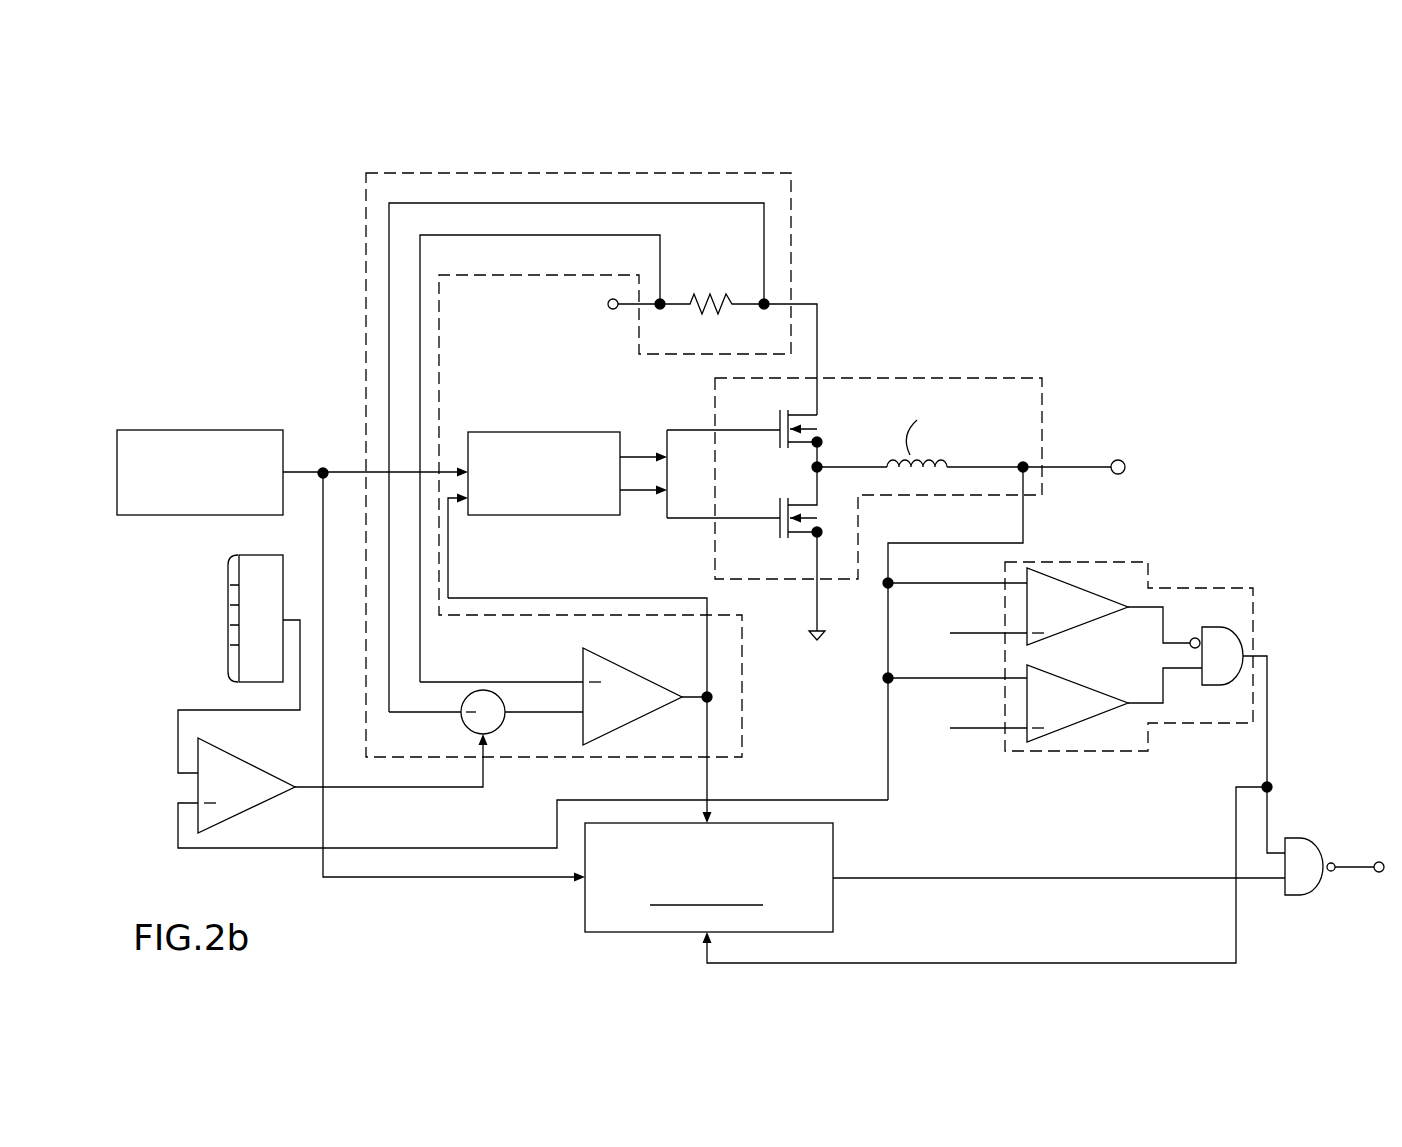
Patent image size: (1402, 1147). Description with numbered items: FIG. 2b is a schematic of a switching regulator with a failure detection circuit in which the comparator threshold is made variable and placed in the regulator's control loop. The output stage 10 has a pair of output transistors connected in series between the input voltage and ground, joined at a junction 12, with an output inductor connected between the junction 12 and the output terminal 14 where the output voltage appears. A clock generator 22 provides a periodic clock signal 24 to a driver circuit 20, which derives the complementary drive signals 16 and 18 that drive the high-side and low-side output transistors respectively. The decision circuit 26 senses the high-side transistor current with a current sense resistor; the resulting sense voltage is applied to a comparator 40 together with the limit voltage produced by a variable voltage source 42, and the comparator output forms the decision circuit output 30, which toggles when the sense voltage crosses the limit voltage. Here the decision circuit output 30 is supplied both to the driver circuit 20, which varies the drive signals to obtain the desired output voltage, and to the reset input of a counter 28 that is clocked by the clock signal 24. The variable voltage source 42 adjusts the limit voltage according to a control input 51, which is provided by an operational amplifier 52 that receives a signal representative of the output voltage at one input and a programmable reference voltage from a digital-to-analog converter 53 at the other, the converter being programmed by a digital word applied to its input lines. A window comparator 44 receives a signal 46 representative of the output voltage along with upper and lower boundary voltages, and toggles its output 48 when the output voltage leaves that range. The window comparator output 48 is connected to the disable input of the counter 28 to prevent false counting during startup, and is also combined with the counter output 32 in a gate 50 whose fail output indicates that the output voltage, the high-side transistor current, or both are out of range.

The output stage 10 is at (988, 378).
The junction 12 is at (817, 467).
The output terminal 14 is at (1123, 457).
The drive signal 16 is at (688, 430).
The drive signal 18 is at (705, 520).
The driver circuit 20 is at (547, 430).
The clock generator 22 is at (202, 430).
The clock signal 24 is at (300, 472).
The decision circuit 26 is at (792, 237).
The counter 28 is at (585, 905).
The decision circuit output 30 is at (707, 778).
The counter output 32 is at (1033, 877).
The comparator 40 is at (637, 668).
The variable voltage source 42 is at (487, 690).
The window comparator 44 is at (1255, 607).
The signal representative of output voltage 46 is at (945, 543).
The window comparator output 48 is at (1267, 722).
The gate 50 is at (1310, 890).
The control input 51 is at (485, 772).
The operational amplifier 52 is at (248, 762).
The digital-to-analog converter 53 is at (265, 555).